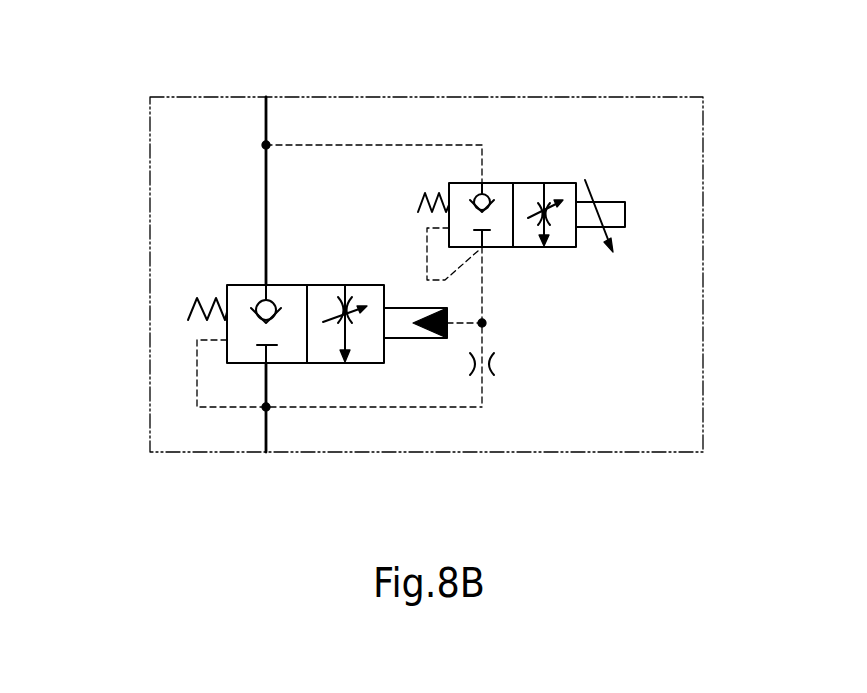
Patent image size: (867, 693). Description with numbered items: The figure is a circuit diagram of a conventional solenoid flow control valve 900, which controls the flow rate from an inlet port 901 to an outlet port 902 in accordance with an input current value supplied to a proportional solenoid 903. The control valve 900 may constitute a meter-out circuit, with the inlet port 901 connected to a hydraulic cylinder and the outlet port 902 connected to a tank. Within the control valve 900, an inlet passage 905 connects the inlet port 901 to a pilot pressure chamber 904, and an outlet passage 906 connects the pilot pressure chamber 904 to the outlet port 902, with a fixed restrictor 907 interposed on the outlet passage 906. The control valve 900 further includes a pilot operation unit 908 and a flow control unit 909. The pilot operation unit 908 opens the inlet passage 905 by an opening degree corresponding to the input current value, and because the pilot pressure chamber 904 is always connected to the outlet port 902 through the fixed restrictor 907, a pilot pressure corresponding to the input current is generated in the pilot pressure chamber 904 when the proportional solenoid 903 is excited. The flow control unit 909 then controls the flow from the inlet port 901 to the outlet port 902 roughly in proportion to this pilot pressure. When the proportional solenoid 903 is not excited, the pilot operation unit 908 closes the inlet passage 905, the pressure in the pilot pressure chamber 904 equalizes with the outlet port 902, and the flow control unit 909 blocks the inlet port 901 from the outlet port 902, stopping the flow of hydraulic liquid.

The solenoid flow control valve 900 is at (677, 97).
The inlet port 901 is at (267, 97).
The outlet port 902 is at (266, 452).
The proportional solenoid 903 is at (614, 192).
The pilot pressure chamber 904 is at (405, 332).
The inlet passage 905 is at (446, 143).
The outlet passage 906 is at (480, 407).
The fixed restrictor 907 is at (492, 365).
The pilot operation unit 908 is at (563, 183).
The flow control unit 909 is at (240, 285).